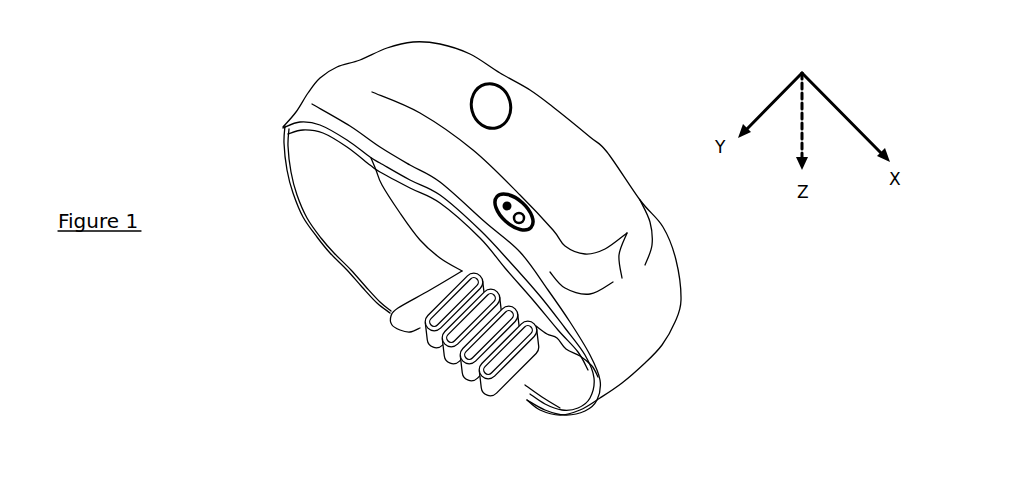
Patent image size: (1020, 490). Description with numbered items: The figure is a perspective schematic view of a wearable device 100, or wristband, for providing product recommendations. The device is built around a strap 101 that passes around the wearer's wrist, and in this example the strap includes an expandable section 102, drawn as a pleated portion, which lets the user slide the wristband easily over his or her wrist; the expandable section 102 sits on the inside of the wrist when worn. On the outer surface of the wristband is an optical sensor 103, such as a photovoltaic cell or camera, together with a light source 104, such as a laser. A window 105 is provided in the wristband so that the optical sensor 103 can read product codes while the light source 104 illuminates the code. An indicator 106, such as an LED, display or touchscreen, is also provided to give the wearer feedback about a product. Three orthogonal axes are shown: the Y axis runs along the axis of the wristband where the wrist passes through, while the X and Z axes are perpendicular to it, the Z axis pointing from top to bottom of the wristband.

The wearable device 100 is at (322, 60).
The strap 101 is at (317, 157).
The expandable section 102 is at (427, 343).
The optical sensor 103 is at (532, 220).
The light source 104 is at (520, 203).
The window 105 is at (540, 210).
The indicator 106 is at (490, 100).